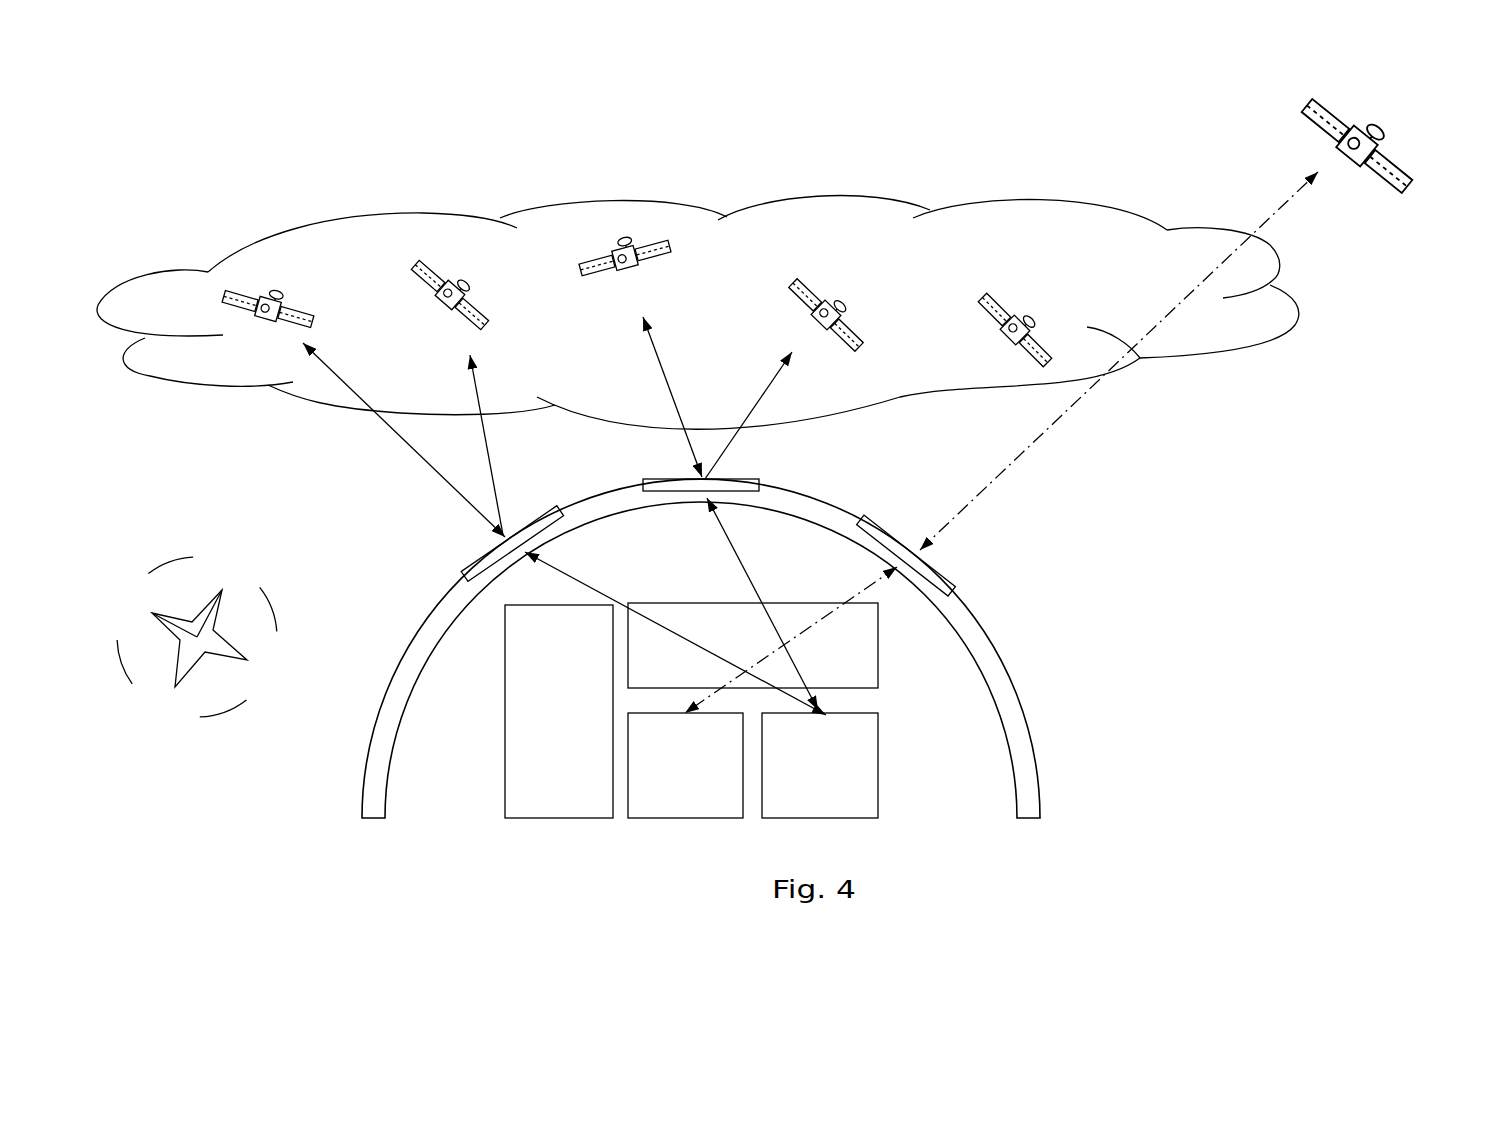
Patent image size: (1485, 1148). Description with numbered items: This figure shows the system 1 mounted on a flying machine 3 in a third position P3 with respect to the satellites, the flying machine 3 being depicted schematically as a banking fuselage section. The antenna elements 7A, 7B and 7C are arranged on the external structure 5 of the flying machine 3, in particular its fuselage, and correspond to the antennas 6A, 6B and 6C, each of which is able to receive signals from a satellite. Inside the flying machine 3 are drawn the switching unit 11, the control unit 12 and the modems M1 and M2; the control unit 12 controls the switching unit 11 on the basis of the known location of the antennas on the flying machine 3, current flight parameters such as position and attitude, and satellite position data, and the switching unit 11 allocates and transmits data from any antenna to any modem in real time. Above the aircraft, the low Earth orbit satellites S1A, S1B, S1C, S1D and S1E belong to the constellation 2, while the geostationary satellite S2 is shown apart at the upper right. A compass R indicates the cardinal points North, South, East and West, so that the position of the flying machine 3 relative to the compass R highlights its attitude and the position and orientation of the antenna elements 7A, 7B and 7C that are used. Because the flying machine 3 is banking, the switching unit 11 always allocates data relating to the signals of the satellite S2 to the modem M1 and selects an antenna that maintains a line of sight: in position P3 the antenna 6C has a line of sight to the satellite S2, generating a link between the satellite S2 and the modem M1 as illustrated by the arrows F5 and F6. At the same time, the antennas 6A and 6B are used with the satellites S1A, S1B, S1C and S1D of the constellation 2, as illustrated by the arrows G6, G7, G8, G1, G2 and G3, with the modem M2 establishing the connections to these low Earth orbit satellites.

The system 1 is at (701, 648).
The constellation 2 is at (1250, 348).
The flying machine 3 is at (701, 648).
The external structure 5 is at (691, 648).
The switching unit 11 is at (727, 659).
The control unit 12 is at (538, 722).
The modem M1 is at (685, 765).
The modem M2 is at (820, 765).
The antenna 6A is at (479, 503).
The antenna 6B is at (759, 457).
The antenna 6C is at (968, 562).
The antenna element 7A is at (568, 514).
The antenna element 7B is at (783, 489).
The antenna element 7C is at (967, 604).
The satellite S1A is at (272, 292).
The satellite S1B is at (447, 280).
The satellite S1C is at (626, 247).
The satellite S1D is at (826, 298).
The satellite S1E is at (1020, 312).
The satellite S2 is at (1378, 136).
The arrow G1 is at (665, 378).
The arrow G2 is at (771, 382).
The arrow G3 is at (737, 553).
The arrow G6 is at (358, 398).
The arrow G7 is at (477, 393).
The arrow G8 is at (575, 576).
The arrow F5 is at (1043, 433).
The arrow F6 is at (893, 573).
The position P3 is at (347, 753).
The compass R is at (160, 547).